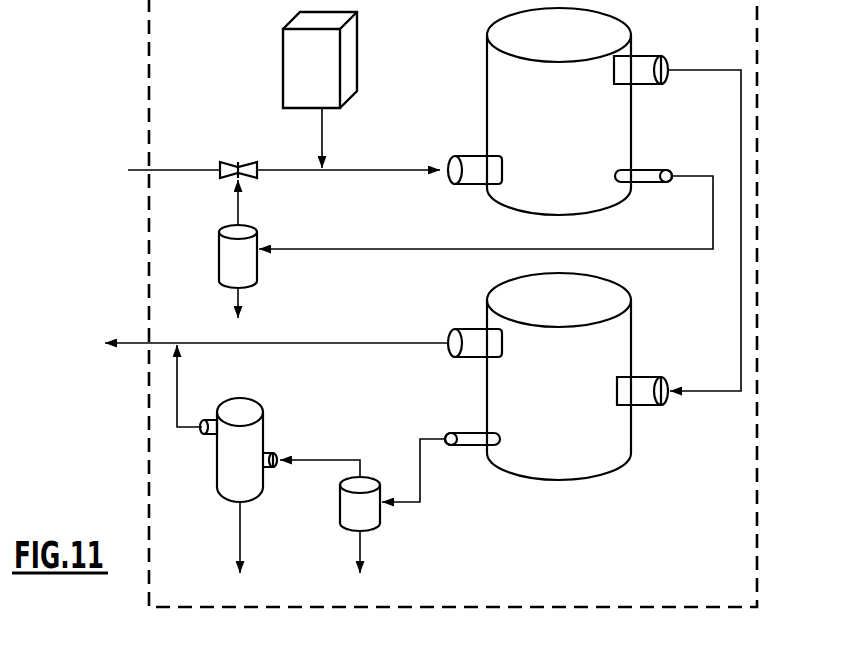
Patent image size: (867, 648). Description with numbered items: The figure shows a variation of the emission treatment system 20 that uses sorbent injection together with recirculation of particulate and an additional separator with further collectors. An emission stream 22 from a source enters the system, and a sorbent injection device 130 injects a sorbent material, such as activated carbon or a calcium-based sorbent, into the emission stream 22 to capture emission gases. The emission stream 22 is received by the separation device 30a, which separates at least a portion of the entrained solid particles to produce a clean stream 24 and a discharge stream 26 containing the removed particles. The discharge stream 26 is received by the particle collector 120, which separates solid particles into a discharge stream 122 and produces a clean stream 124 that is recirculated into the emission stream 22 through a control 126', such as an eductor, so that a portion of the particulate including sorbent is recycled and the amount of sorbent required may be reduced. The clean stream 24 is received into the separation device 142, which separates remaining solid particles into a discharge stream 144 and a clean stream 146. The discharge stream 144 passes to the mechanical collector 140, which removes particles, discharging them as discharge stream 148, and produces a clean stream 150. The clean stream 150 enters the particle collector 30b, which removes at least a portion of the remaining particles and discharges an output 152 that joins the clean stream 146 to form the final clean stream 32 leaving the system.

The emission treatment system 20 is at (768, 108).
The emission stream 22 is at (168, 170).
The clean stream 24 is at (695, 70).
The discharge stream 26 is at (688, 176).
The separation device 30a is at (627, 25).
The particle collector 30b is at (266, 412).
The clean stream 32 is at (140, 345).
The particle collector 120 is at (258, 262).
The discharge stream 122 is at (241, 308).
The clean stream 124 is at (228, 226).
The control 126' is at (264, 151).
The sorbent injection device 130 is at (357, 30).
The particle collector 140 is at (380, 512).
The separation device 142 is at (633, 318).
The discharge stream 144 is at (420, 470).
The clean stream 146 is at (372, 345).
The discharge stream 148 is at (358, 548).
The clean stream 150 is at (357, 458).
The outlet line 152 is at (178, 388).